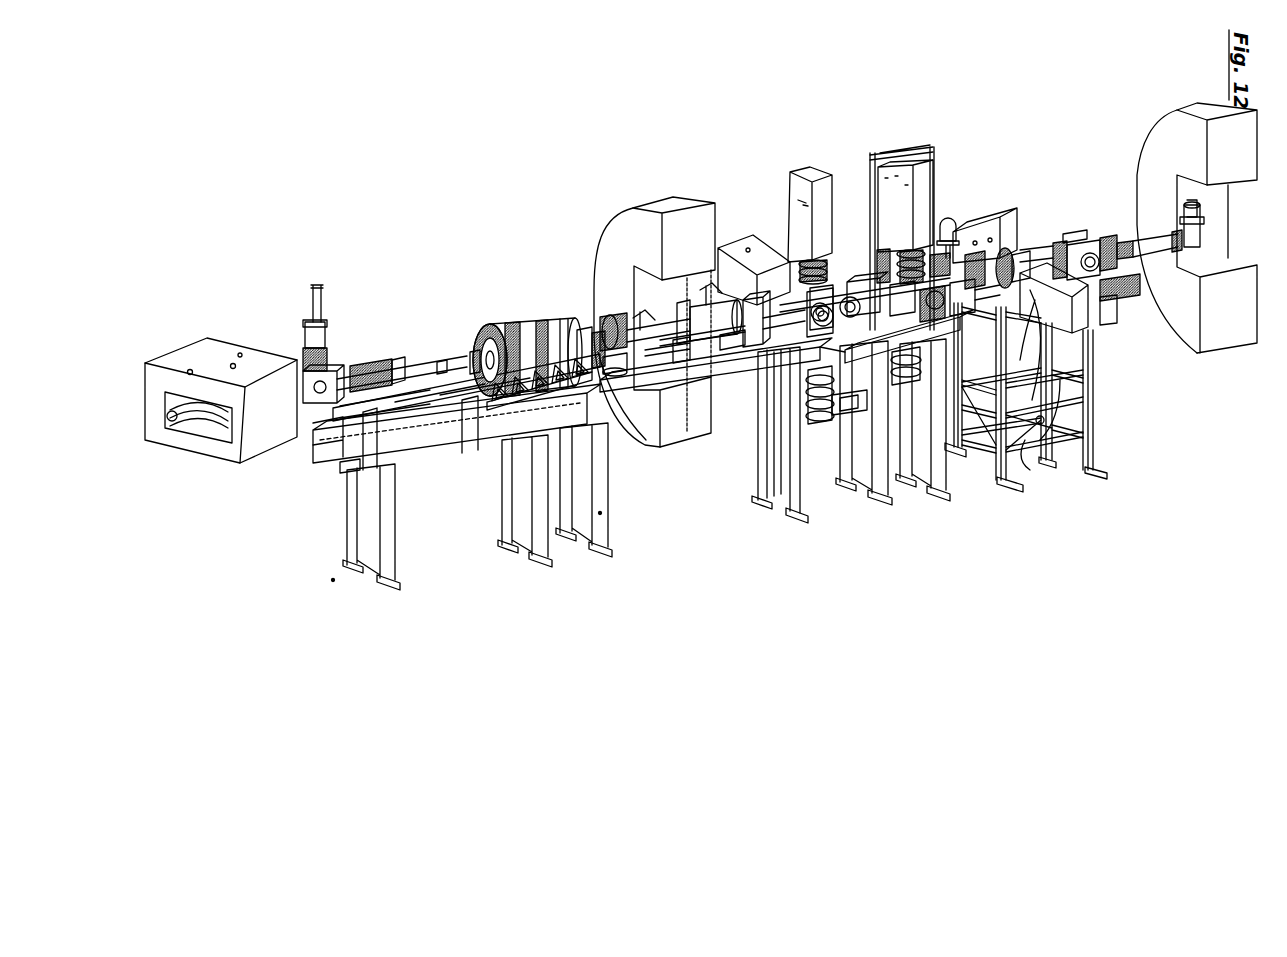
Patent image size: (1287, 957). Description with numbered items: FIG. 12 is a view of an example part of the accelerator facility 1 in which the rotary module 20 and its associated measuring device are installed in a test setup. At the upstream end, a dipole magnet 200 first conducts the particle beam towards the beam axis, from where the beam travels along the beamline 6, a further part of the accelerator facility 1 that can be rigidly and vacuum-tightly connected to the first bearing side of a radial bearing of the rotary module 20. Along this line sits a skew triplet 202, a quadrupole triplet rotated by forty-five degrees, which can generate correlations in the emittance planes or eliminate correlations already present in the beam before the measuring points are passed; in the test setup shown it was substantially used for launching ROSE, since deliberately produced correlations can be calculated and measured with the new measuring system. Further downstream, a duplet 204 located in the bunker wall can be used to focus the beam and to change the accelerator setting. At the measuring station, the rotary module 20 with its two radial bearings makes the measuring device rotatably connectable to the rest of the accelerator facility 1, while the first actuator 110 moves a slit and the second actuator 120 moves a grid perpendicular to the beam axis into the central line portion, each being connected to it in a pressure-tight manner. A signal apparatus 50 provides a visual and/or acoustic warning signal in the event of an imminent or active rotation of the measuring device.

The accelerator facility 1 is at (448, 270).
The dipole magnet 200 is at (263, 357).
The beamline 6 is at (407, 363).
The skew triplet 202 is at (530, 327).
The duplet 204 is at (722, 285).
The signal apparatus 50 is at (950, 213).
The second actuator 120 is at (987, 217).
The rotary module 20 is at (1040, 252).
The first actuator 110 is at (1057, 315).